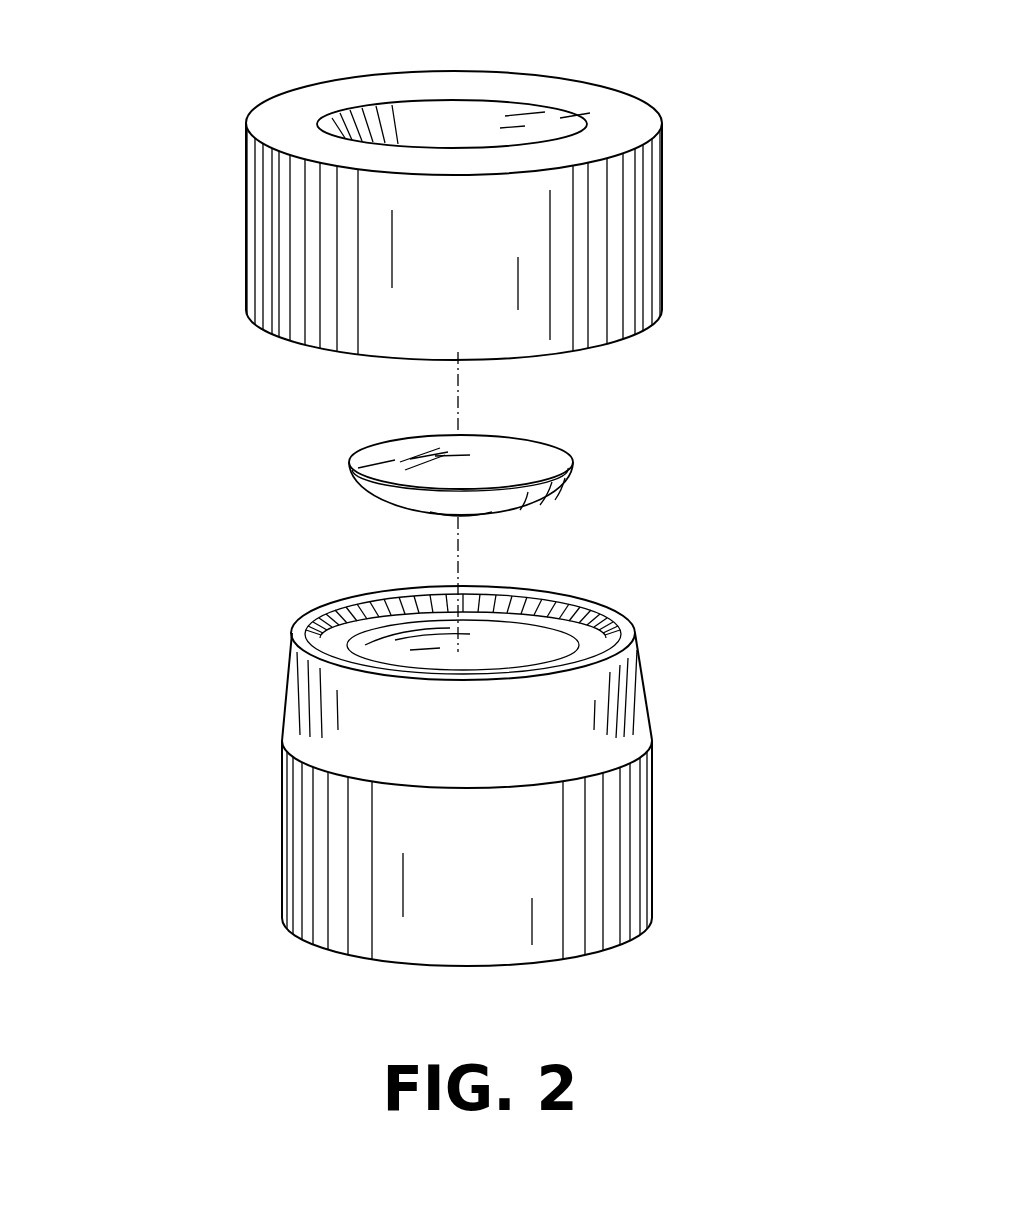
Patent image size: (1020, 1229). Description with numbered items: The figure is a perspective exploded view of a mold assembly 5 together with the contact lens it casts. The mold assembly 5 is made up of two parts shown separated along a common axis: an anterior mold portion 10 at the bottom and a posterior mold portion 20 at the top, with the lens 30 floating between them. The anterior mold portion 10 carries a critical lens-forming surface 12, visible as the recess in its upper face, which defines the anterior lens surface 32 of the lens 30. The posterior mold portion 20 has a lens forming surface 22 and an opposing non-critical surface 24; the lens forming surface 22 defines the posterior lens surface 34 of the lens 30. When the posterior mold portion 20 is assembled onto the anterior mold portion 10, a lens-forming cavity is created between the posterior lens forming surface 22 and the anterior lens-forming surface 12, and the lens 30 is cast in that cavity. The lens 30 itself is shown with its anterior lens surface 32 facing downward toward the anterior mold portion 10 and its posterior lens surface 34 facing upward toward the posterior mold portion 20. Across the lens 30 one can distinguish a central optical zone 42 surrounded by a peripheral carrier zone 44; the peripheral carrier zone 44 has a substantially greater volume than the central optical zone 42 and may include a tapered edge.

The mold assembly 5 is at (173, 734).
The anterior mold portion 10 is at (650, 742).
The lens-forming surface 12 is at (498, 633).
The posterior mold portion 20 is at (665, 226).
The lens forming surface 22 is at (322, 872).
The non-critical surface 24 is at (472, 118).
The lens 30 is at (572, 466).
The anterior lens surface 32 is at (455, 513).
The posterior lens surface 34 is at (518, 450).
The central optical zone 42 is at (417, 465).
The peripheral carrier zone 44 is at (366, 468).